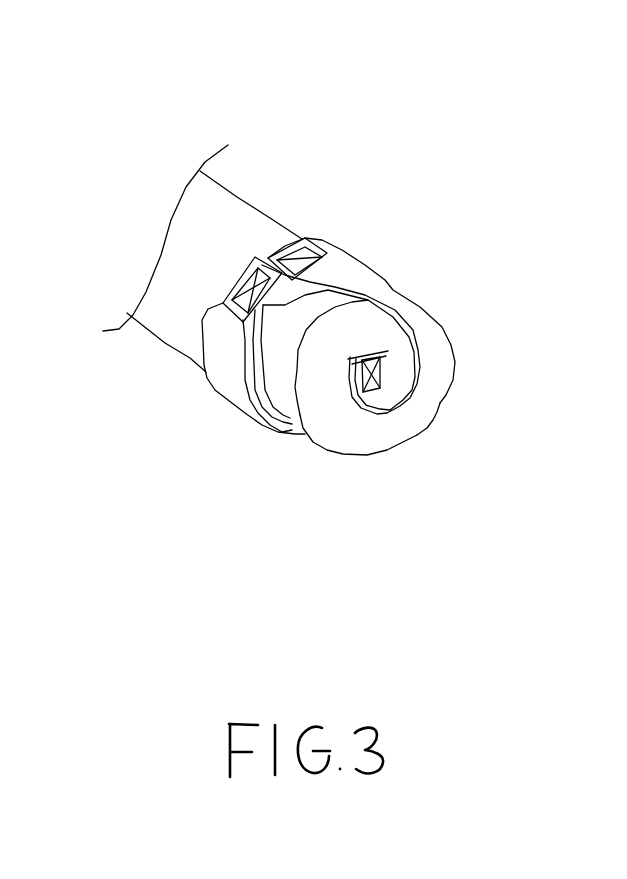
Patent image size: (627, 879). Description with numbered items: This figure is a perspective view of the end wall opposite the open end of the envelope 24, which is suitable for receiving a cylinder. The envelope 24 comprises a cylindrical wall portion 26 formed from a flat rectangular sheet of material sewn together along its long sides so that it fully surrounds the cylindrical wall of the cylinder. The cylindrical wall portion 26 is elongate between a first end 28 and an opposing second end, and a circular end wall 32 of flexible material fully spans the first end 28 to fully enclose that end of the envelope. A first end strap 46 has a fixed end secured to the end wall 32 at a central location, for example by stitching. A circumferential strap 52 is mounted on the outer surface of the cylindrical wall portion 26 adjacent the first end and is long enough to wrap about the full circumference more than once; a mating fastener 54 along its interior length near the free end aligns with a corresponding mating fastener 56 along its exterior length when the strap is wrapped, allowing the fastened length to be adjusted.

The envelope 24 is at (207, 219).
The cylindrical wall portion 26 is at (311, 140).
The first end 28 is at (356, 435).
The circular end wall 32 is at (475, 445).
The first end strap 46 is at (422, 339).
The circumferential strap 52 is at (344, 285).
The mating fastener 54 is at (183, 361).
The mating fastener 56 is at (331, 209).